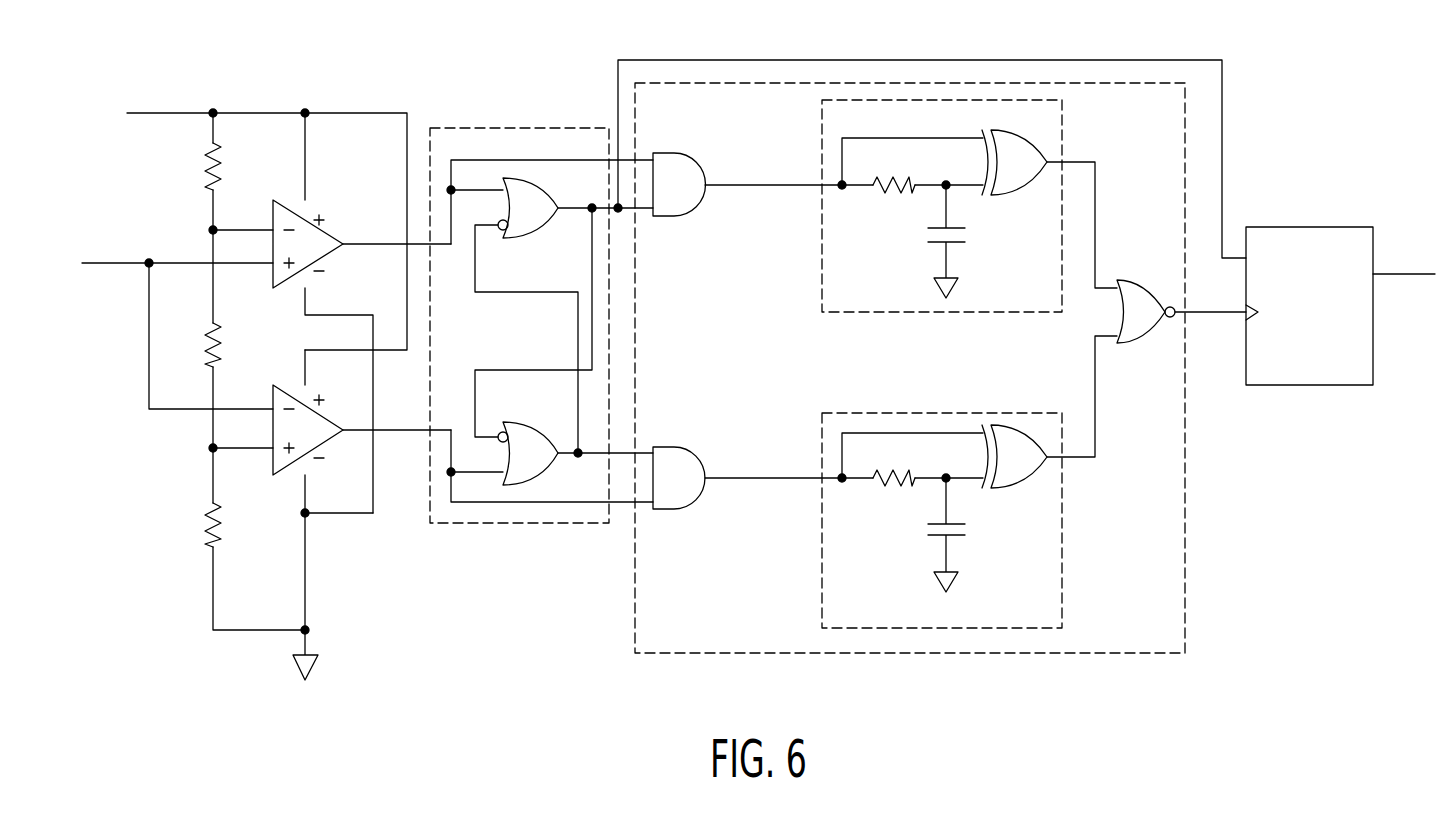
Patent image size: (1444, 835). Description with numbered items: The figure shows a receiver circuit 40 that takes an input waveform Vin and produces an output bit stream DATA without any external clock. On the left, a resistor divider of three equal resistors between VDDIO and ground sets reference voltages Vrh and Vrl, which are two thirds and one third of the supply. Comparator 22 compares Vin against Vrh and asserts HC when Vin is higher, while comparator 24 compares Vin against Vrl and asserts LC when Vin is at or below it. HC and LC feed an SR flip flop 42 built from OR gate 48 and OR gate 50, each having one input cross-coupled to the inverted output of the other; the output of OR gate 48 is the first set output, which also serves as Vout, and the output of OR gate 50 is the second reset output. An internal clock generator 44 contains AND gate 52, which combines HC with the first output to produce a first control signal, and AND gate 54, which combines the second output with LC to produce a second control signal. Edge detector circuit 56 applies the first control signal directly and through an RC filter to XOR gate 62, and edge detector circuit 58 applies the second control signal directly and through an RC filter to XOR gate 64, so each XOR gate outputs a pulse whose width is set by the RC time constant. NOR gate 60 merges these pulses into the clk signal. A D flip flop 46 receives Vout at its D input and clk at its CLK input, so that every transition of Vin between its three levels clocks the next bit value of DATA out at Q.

The comparator 22 is at (287, 201).
The comparator 24 is at (285, 475).
The receiver circuit 40 is at (498, 664).
The SR flip flop 42 is at (477, 128).
The internal clock generator 44 is at (1186, 553).
The D flip flop 46 is at (1310, 227).
The OR gate 48 is at (518, 240).
The OR gate 50 is at (525, 422).
The AND gate 52 is at (676, 218).
The AND gate 54 is at (672, 447).
The edge detector circuit 56 is at (917, 313).
The edge detector circuit 58 is at (905, 413).
The NOR gate 60 is at (1140, 343).
The XOR gate 62 is at (1018, 196).
The XOR gate 64 is at (1018, 488).